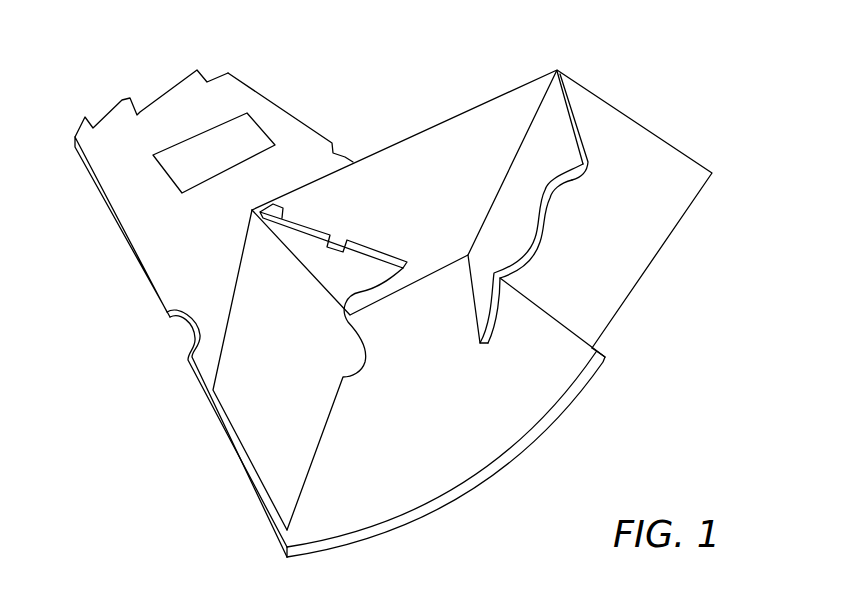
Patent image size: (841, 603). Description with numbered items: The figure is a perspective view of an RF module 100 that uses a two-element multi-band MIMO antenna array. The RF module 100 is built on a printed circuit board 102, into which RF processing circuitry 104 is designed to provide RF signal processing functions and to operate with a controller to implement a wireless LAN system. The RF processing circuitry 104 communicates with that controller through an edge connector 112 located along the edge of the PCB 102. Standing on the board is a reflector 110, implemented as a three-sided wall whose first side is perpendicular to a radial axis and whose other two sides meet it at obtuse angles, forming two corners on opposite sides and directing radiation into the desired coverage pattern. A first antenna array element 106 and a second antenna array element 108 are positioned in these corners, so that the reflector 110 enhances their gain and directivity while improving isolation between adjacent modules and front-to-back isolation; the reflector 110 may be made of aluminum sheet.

The RF module 100 is at (616, 86).
The printed circuit board 102 is at (517, 382).
The RF processing circuitry 104 is at (247, 133).
The first antenna array element 106 is at (327, 267).
The second antenna array element 108 is at (540, 154).
The reflector 110 is at (405, 188).
The edge connector 112 is at (107, 117).